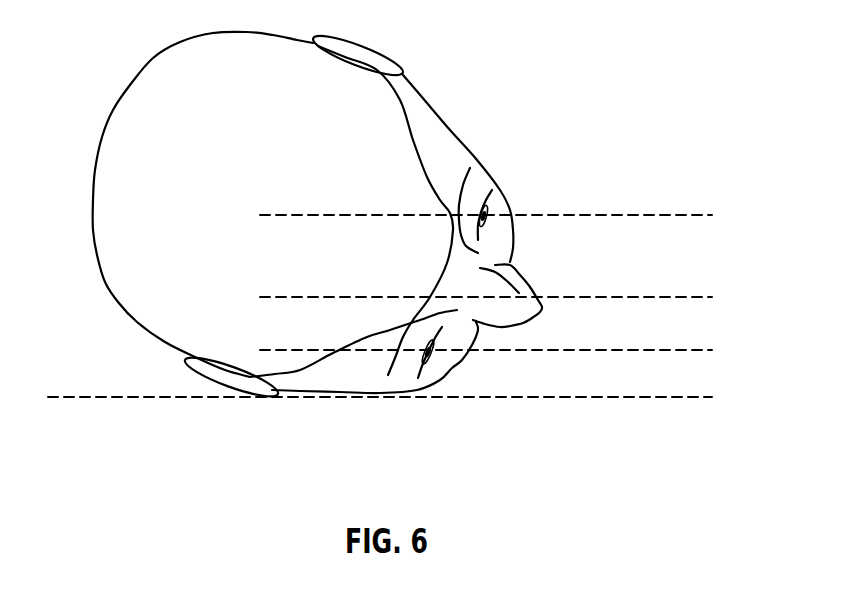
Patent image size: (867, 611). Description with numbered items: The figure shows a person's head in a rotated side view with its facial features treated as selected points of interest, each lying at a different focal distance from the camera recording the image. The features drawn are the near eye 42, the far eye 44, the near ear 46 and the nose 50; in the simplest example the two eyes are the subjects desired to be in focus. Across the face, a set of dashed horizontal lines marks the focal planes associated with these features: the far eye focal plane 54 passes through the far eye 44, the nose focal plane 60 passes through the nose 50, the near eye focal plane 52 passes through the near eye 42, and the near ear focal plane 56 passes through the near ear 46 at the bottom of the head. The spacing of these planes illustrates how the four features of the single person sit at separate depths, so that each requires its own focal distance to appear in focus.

The near eye 42 is at (433, 355).
The far eye 44 is at (486, 208).
The near ear 46 is at (252, 399).
The nose 50 is at (541, 309).
The near eye focal plane 52 is at (684, 358).
The far eye focal plane 54 is at (684, 225).
The near ear focal plane 56 is at (684, 405).
The nose focal plane 60 is at (684, 306).